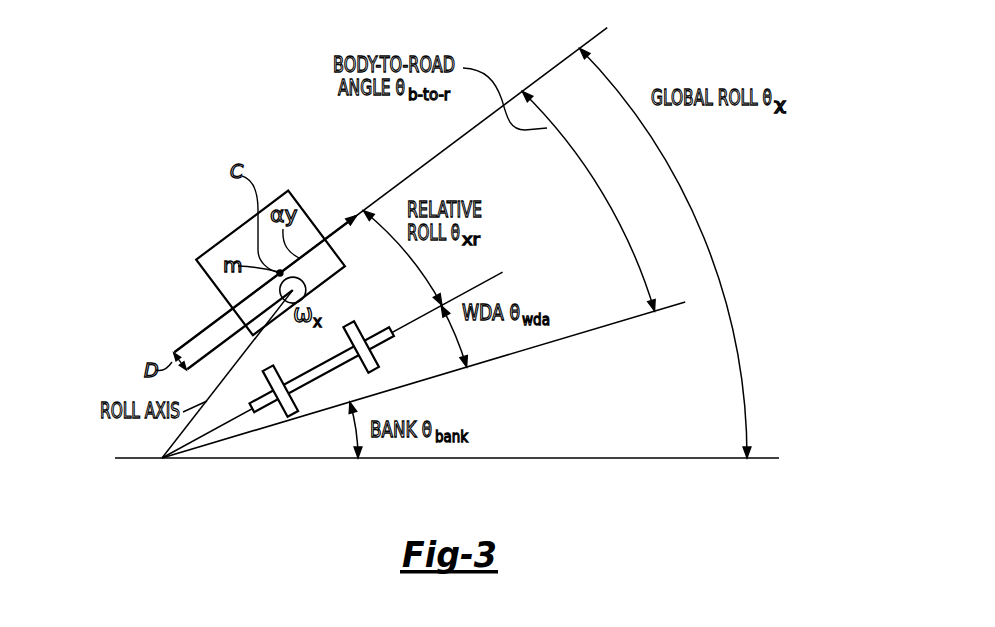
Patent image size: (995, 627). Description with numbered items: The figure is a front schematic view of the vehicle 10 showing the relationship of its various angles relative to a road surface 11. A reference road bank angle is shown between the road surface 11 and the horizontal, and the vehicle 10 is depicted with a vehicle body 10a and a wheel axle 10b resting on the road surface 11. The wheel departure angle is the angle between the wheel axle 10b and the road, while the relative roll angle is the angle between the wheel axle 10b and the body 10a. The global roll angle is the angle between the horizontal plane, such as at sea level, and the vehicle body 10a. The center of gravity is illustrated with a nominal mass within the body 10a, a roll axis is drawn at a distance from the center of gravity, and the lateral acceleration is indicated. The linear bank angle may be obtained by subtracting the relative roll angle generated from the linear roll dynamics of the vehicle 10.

The vehicle 10 is at (165, 277).
The vehicle body 10a is at (220, 242).
The wheel axle 10b is at (356, 326).
The road surface 11 is at (525, 352).